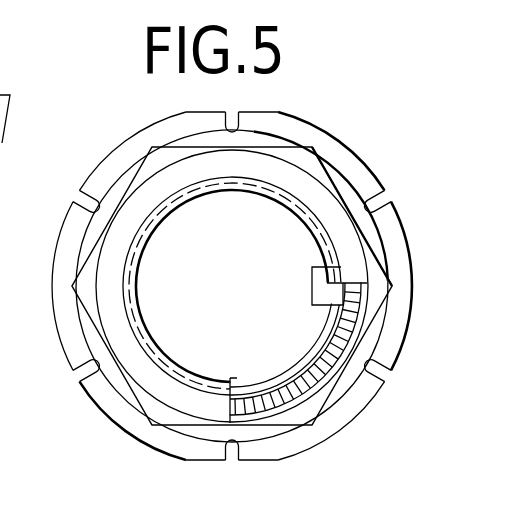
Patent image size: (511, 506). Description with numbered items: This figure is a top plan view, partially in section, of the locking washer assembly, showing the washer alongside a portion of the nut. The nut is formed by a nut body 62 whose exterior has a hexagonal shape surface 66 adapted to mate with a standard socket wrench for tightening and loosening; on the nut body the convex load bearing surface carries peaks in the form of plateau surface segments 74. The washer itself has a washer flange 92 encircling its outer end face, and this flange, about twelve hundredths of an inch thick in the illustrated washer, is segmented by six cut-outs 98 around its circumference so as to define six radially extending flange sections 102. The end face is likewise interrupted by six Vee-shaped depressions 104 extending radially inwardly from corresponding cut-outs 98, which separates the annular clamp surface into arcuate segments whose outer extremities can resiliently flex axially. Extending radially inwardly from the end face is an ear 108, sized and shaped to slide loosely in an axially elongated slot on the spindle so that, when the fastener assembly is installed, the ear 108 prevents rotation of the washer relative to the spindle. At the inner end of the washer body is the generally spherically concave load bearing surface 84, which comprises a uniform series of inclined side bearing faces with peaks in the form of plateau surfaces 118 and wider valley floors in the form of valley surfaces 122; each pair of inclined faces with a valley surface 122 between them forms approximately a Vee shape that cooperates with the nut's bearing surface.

The hexagonal shape surface 66 is at (128, 187).
The washer flange 92 is at (348, 163).
The cut-outs 98 is at (374, 200).
The flange sections 102 is at (51, 280).
The Vee-shaped depressions 104 is at (8, 134).
The ear 108 is at (323, 288).
The spherically concave load bearing surface 84 is at (353, 312).
The plateau surfaces 118 is at (287, 390).
The valley surfaces 122 is at (330, 363).
The plateau surface segments 74 is at (11, 25).
The nut body 62 is at (15, 491).